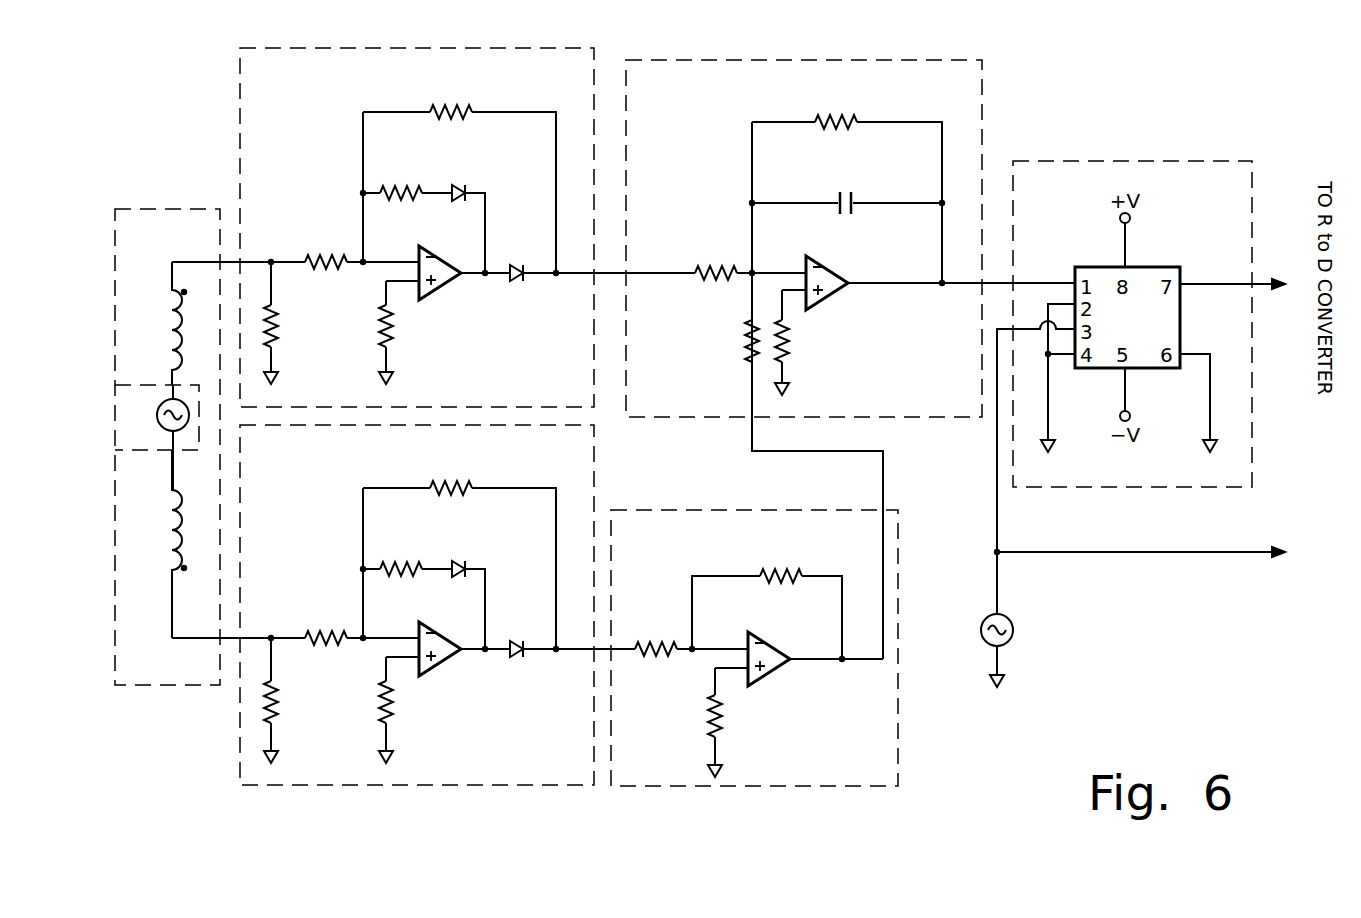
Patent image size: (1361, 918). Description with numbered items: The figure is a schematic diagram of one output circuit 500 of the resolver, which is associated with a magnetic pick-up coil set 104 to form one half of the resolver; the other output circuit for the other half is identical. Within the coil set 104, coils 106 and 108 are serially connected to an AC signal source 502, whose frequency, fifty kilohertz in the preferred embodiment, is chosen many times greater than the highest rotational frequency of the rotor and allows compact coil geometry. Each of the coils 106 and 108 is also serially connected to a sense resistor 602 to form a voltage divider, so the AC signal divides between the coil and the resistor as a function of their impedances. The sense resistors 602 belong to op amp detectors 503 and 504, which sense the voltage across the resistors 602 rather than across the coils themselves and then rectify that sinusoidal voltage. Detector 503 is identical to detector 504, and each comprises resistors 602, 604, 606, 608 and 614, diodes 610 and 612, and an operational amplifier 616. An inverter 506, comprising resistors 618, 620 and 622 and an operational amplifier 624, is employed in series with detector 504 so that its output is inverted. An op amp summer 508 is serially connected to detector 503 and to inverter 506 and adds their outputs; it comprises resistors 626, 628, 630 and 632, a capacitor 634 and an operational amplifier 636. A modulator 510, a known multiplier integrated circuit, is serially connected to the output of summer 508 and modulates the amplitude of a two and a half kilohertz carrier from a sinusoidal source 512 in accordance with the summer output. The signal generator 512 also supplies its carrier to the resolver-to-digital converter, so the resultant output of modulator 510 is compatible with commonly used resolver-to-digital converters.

The magnetic pick-up coil set 104 is at (172, 209).
The coil 106 is at (176, 295).
The coil 108 is at (176, 500).
The output circuit 500 is at (772, 42).
The AC signal source 502 is at (157, 416).
The op amp detector 503 is at (594, 48).
The op amp detector 504 is at (594, 470).
The inverter 506 is at (898, 512).
The op amp summer 508 is at (982, 66).
The modulator 510 is at (1142, 161).
The sinusoidal source 512 is at (980, 634).
The sense resistor 602 is at (284, 345).
The resistor 604 is at (322, 258).
The resistor 606 is at (450, 108).
The resistor 608 is at (402, 188).
The diode 610 is at (458, 186).
The diode 612 is at (514, 264).
The resistor 614 is at (398, 345).
The operational amplifier 616 is at (446, 292).
The resistor 618 is at (658, 642).
The resistor 620 is at (726, 730).
The resistor 622 is at (782, 570).
The operational amplifier 624 is at (774, 680).
The resistor 626 is at (714, 266).
The resistor 628 is at (744, 346).
The resistor 630 is at (792, 348).
The resistor 632 is at (840, 118).
The capacitor 634 is at (850, 198).
The operational amplifier 636 is at (832, 304).